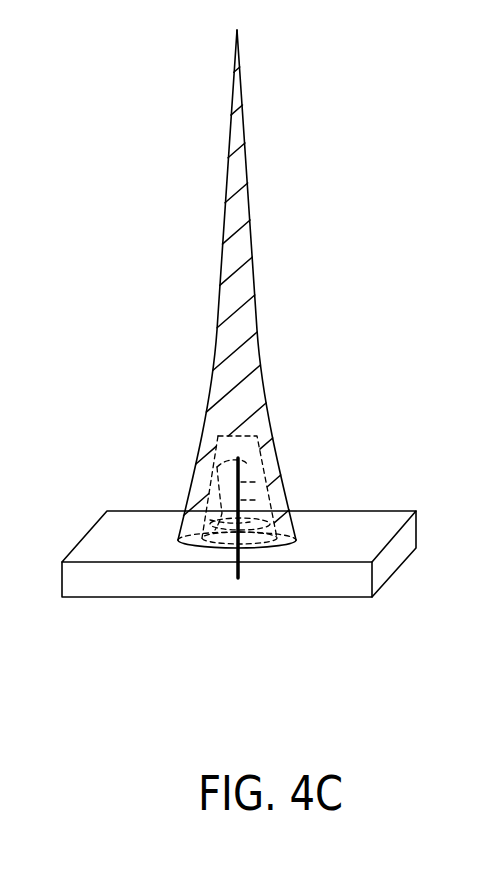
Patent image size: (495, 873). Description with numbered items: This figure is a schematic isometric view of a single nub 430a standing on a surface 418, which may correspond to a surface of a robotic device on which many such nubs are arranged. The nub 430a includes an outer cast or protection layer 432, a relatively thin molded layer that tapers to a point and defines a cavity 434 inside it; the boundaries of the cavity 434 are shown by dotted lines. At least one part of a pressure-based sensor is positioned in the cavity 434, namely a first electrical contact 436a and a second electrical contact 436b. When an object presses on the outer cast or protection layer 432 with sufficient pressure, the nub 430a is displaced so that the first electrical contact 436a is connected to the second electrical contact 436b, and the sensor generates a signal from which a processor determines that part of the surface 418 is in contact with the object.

The surface 418 is at (406, 557).
The nub 430a is at (259, 289).
The outer cast or protection layer 432 is at (220, 326).
The cavity 434 is at (222, 486).
The first electrical contact 436a is at (238, 578).
The second electrical contact 436b is at (225, 532).